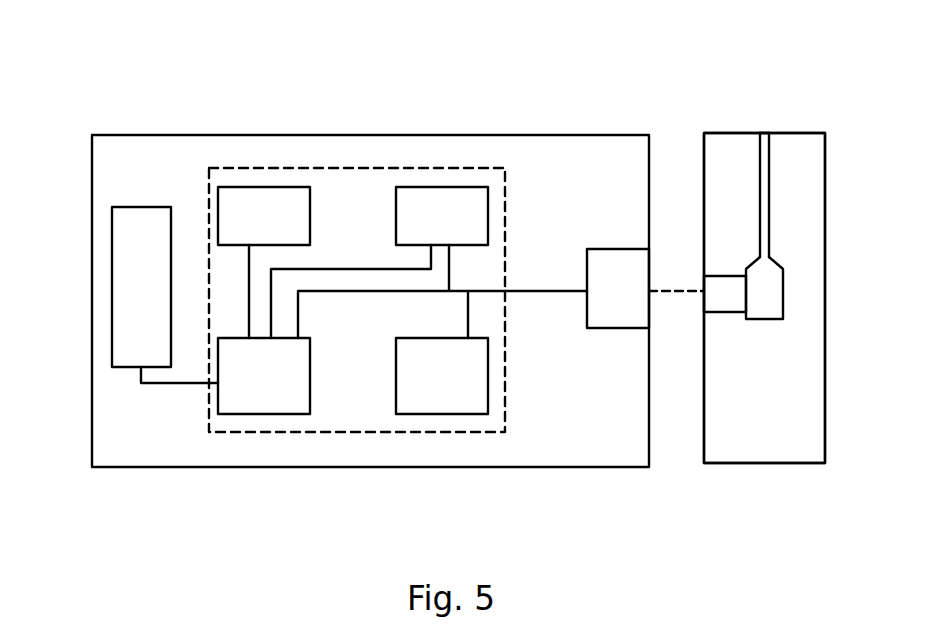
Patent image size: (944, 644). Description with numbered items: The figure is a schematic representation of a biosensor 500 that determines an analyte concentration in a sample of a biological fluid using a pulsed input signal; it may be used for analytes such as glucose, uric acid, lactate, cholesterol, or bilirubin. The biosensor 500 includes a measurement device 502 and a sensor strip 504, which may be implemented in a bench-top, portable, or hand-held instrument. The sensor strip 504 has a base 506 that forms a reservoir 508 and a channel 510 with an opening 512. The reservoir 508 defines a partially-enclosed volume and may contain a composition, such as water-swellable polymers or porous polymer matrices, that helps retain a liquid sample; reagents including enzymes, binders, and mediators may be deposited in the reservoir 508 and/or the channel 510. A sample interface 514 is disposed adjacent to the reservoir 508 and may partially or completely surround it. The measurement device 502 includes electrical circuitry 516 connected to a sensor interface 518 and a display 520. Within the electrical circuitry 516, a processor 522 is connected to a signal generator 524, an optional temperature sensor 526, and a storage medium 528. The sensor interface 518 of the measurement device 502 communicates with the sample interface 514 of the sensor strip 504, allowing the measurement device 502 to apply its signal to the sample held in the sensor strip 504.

The biosensor 500 is at (92, 48).
The measurement device 502 is at (577, 468).
The sensor strip 504 is at (759, 464).
The base 506 is at (765, 408).
The reservoir 508 is at (765, 292).
The channel 510 is at (766, 186).
The opening 512 is at (764, 138).
The sample interface 514 is at (722, 290).
The electrical circuitry 516 is at (363, 433).
The sensor interface 518 is at (610, 272).
The display 520 is at (140, 314).
The processor 522 is at (266, 397).
The signal generator 524 is at (444, 388).
The temperature sensor 526 is at (423, 208).
The storage medium 528 is at (263, 208).